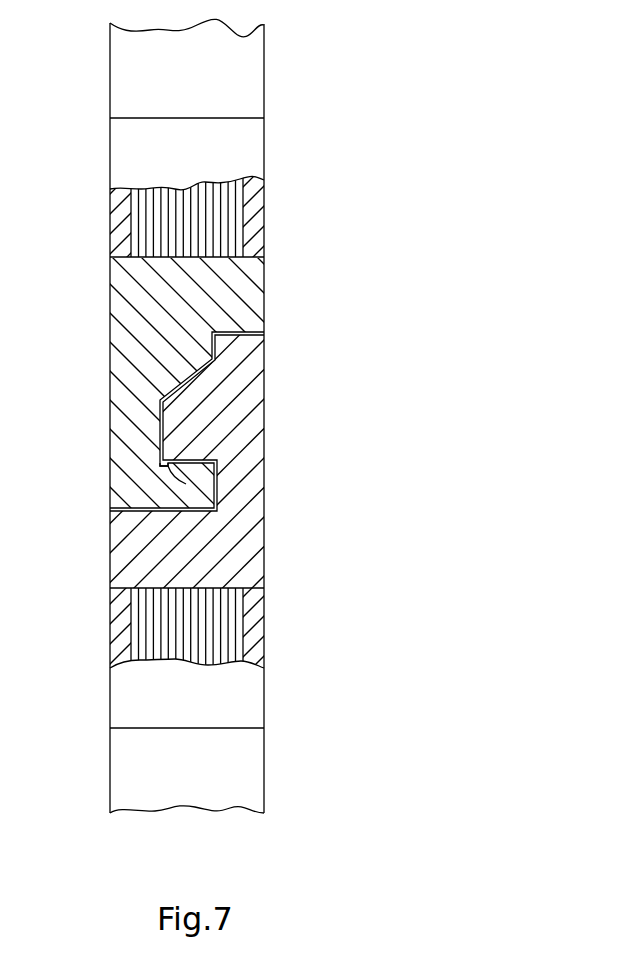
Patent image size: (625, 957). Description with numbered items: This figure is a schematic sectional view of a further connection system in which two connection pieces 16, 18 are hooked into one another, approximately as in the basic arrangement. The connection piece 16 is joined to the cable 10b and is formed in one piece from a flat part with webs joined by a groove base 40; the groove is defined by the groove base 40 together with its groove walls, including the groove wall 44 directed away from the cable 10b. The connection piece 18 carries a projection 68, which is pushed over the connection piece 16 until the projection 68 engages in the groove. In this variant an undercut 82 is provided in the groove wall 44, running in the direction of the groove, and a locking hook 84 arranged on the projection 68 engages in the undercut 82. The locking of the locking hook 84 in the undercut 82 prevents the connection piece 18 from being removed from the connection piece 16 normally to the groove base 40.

The cable 10b is at (243, 85).
The connection piece 16 is at (125, 312).
The connection piece 18 is at (243, 550).
The groove base 40 is at (157, 426).
The groove wall 44 is at (220, 470).
The projection 68 is at (200, 420).
The undercut 82 is at (186, 484).
The locking hook 84 is at (158, 454).